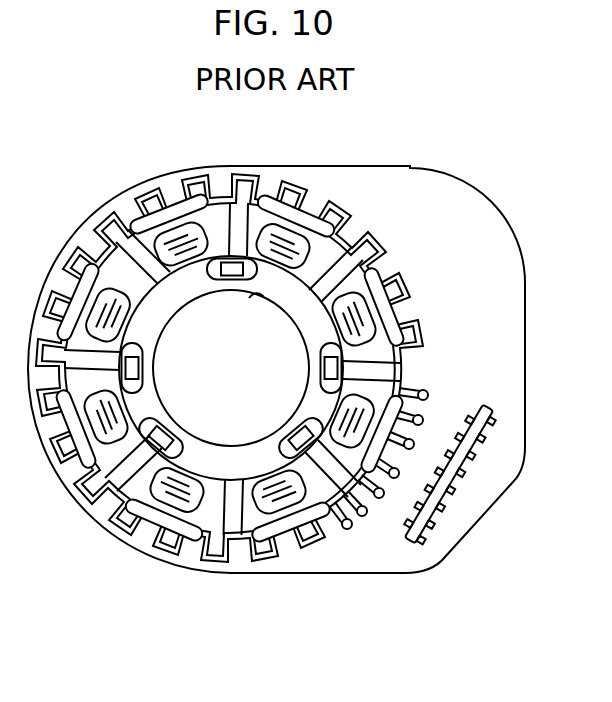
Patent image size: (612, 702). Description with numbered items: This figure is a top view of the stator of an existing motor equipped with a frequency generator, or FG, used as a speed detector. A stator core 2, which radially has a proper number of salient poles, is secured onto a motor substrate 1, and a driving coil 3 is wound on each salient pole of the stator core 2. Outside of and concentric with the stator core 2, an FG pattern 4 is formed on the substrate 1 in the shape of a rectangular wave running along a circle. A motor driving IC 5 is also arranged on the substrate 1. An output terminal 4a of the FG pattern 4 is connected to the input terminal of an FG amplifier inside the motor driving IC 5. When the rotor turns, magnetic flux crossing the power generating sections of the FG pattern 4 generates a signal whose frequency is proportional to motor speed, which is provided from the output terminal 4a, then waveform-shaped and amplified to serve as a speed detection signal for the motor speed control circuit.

The motor substrate 1 is at (507, 229).
The stator core 2 is at (160, 277).
The driving coil 3 is at (167, 240).
The FG pattern 4 is at (73, 475).
The output terminal 4a is at (357, 205).
The motor driving IC 5 is at (450, 483).